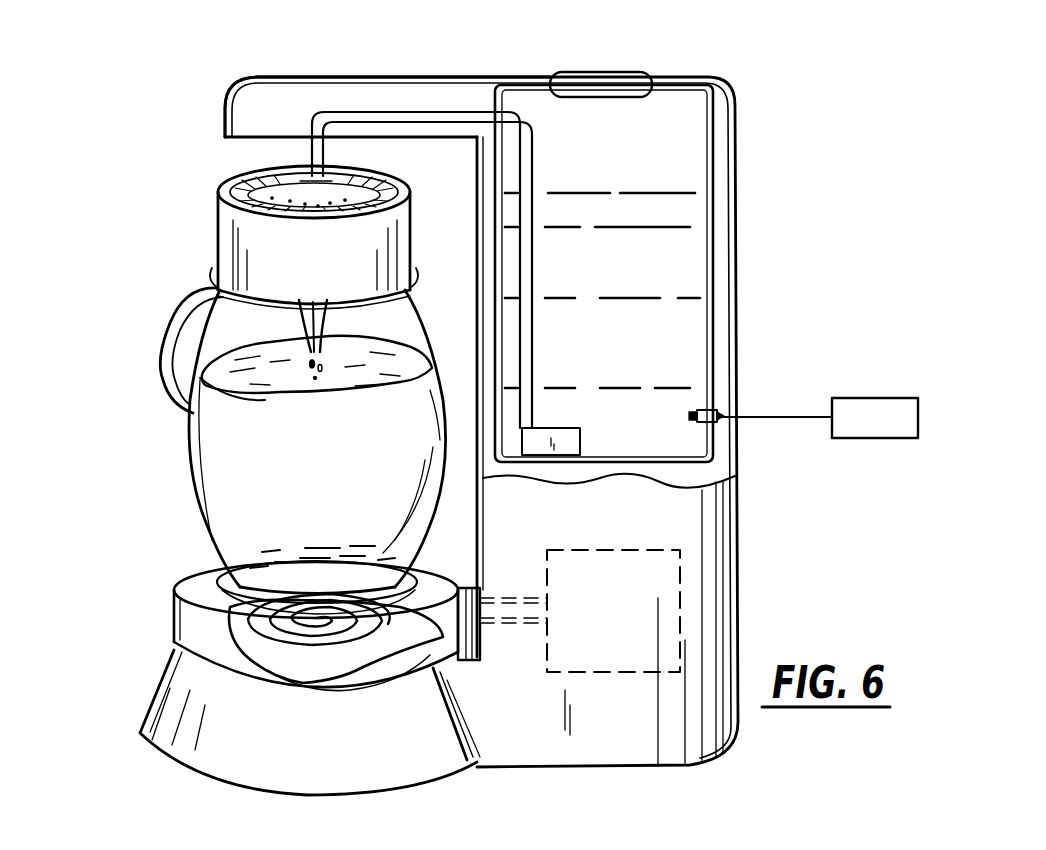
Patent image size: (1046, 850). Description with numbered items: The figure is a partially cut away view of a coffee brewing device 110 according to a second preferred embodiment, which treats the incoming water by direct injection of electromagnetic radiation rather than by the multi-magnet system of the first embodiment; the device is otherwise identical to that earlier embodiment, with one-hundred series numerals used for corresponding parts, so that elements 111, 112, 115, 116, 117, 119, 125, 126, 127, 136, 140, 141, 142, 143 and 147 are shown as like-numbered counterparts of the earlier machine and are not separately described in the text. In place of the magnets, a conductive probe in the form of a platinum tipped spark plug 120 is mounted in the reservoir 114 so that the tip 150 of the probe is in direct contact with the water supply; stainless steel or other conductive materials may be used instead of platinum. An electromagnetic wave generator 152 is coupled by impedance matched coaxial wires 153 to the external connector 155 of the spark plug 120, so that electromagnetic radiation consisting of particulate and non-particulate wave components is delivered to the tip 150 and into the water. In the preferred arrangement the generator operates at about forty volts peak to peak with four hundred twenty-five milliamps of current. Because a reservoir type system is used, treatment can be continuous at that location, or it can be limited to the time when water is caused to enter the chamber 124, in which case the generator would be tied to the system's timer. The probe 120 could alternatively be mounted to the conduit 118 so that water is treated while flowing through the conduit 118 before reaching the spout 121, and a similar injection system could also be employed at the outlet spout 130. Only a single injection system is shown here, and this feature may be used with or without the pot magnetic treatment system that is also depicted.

The coffee brewing device 110 is at (188, 186).
The base 111 is at (175, 606).
The warming plate 112 is at (232, 566).
The reservoir 114 is at (735, 270).
The reservoir cap 115 is at (652, 76).
The pump 116 is at (556, 438).
The water 117 is at (680, 193).
The conduit 118 is at (532, 350).
The housing arm 119 is at (264, 80).
The conductive probe 120 is at (698, 404).
The spout 121 is at (326, 170).
The chamber 124 is at (393, 248).
The carafe 125 is at (188, 466).
The basket rim 126 is at (365, 188).
The filter 127 is at (285, 196).
The outlet spout 130 is at (340, 350).
The drops 136 is at (318, 388).
The control unit 140 is at (680, 605).
The connector lead 141 is at (508, 623).
The heating element 142 is at (280, 618).
The connector lead 143 is at (498, 598).
The heating coil 147 is at (279, 638).
The tip 150 is at (695, 417).
The electromagnetic wave generator 152 is at (860, 398).
The impedance matched coaxial wires 153 is at (780, 415).
The external connector 155 is at (724, 420).